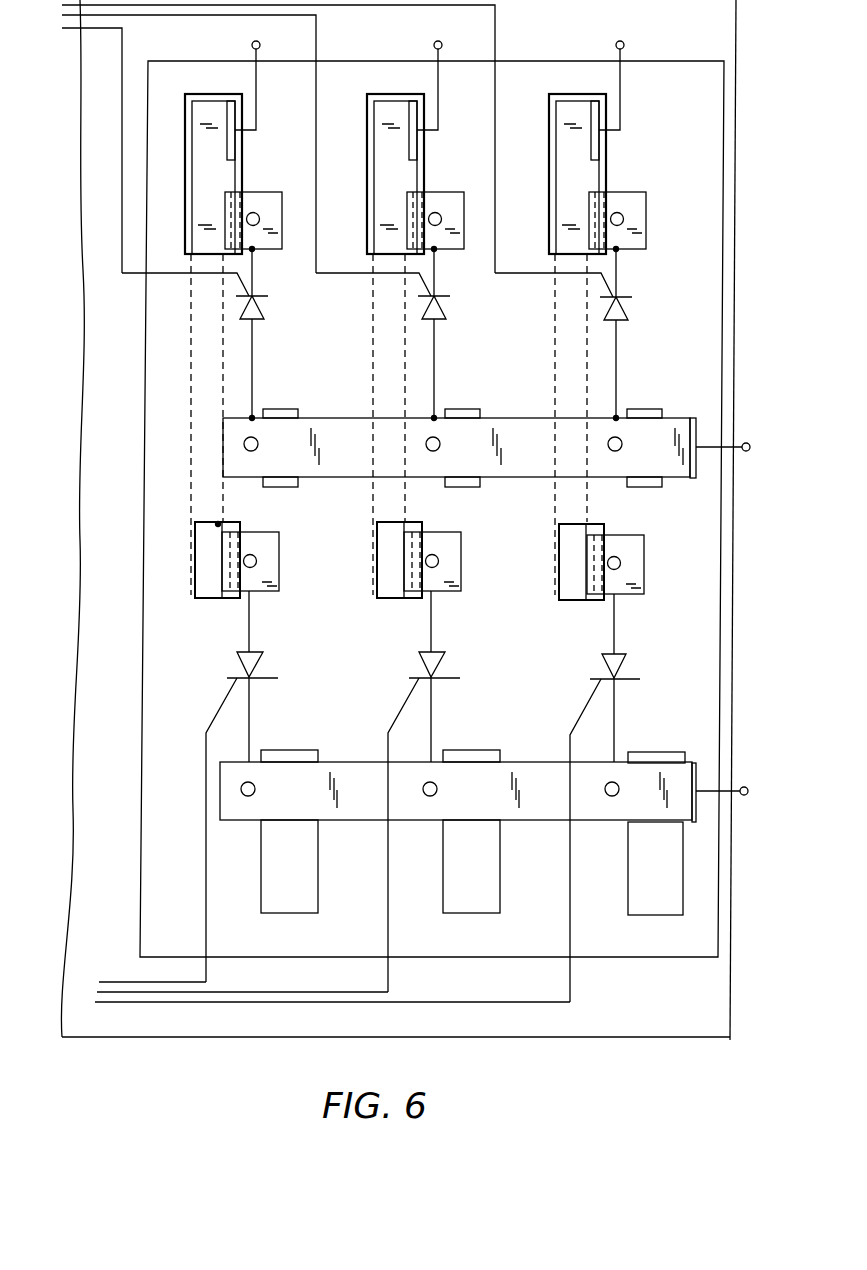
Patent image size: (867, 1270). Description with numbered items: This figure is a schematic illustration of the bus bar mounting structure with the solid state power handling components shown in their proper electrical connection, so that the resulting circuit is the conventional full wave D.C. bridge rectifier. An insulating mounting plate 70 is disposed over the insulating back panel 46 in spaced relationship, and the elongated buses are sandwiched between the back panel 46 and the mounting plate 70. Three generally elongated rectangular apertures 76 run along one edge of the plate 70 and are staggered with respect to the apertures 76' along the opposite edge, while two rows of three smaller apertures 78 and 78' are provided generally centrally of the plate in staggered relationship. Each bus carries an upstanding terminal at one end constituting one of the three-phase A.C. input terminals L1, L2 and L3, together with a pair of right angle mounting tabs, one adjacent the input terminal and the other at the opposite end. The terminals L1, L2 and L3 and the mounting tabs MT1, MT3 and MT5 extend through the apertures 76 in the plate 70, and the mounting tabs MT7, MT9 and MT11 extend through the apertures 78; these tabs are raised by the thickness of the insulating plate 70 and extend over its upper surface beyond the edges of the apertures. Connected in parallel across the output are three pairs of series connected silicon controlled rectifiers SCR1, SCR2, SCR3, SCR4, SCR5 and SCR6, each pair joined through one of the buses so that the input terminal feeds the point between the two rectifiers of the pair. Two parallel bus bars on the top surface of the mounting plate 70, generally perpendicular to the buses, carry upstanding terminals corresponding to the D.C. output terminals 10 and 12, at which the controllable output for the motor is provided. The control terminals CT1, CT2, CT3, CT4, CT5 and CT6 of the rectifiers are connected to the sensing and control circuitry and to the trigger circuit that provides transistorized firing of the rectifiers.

The back panel 46 is at (737, 30).
The mounting plate 70 is at (706, 110).
The aperture 76 is at (395, 158).
The input terminal L1 is at (238, 151).
The input terminal L2 is at (420, 151).
The input terminal L3 is at (601, 150).
The mounting tab MT1 is at (272, 250).
The mounting tab MT3 is at (454, 250).
The mounting tab MT5 is at (636, 250).
The mounting tab MT7 is at (280, 567).
The mounting tab MT9 is at (462, 567).
The mounting tab MT11 is at (645, 569).
The silicon controlled rectifier SCR1 is at (263, 663).
The silicon controlled rectifier SCR2 is at (265, 315).
The silicon controlled rectifier SCR3 is at (445, 663).
The silicon controlled rectifier SCR4 is at (447, 315).
The silicon controlled rectifier SCR5 is at (626, 664).
The silicon controlled rectifier SCR6 is at (630, 312).
The control terminal CT1 is at (226, 698).
The control terminal CT2 is at (239, 284).
The control terminal CT3 is at (410, 700).
The control terminal CT4 is at (421, 284).
The control terminal CT5 is at (583, 702).
The control terminal CT6 is at (600, 288).
The output terminal 10 is at (700, 432).
The output terminal 12 is at (697, 782).
The aperture 78' is at (478, 432).
The aperture 78 is at (399, 567).
The aperture 76' is at (492, 832).